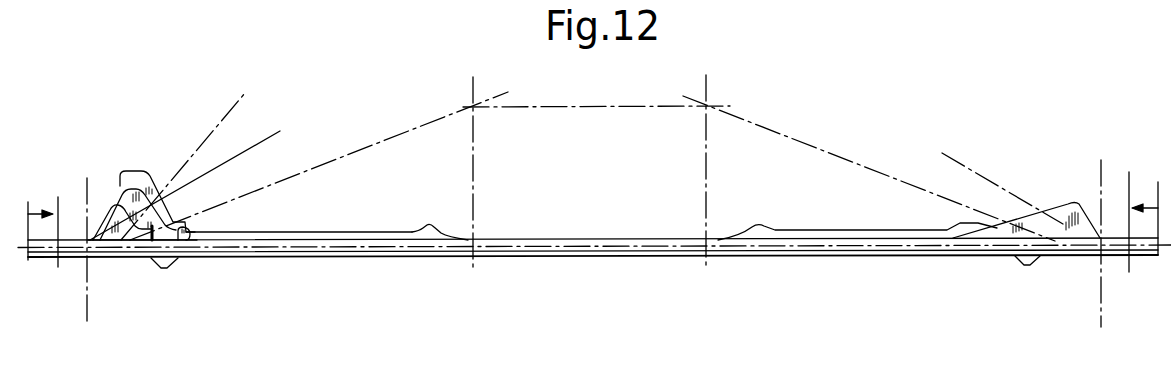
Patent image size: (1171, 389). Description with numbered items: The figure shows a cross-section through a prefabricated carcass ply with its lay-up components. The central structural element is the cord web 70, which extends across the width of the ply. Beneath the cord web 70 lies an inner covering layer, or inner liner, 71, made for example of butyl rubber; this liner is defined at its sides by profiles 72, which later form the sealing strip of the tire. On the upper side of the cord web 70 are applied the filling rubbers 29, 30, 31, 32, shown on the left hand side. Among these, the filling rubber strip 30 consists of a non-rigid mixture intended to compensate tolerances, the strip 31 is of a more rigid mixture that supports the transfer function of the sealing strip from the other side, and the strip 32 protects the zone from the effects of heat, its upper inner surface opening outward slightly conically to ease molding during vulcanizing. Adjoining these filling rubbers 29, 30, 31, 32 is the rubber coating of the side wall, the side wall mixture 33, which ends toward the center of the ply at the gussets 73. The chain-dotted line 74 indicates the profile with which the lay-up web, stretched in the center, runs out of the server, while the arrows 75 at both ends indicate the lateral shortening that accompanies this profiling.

The filling rubber 29 is at (110, 233).
The filling rubber strip 30 is at (120, 203).
The strip 31 is at (132, 188).
The strip 32 is at (143, 183).
The rubber coating of the side wall 33 is at (308, 237).
The cord web 70 is at (500, 248).
The inner covering layer 71 is at (365, 258).
The profiles 72 is at (157, 266).
The gussets 73 is at (432, 224).
The chain-dotted line 74 is at (362, 150).
The arrows 75 is at (45, 211).